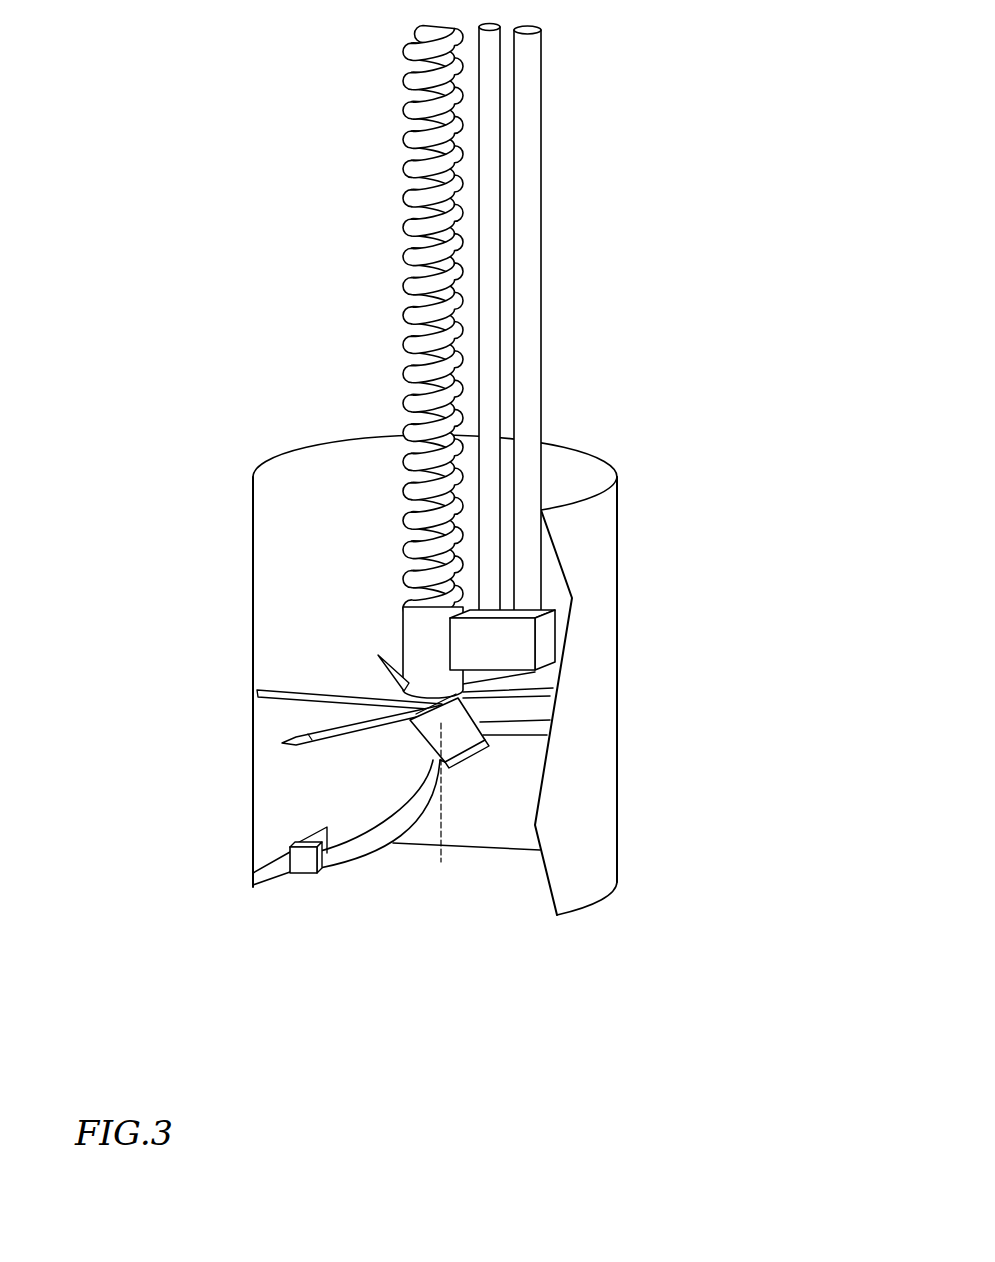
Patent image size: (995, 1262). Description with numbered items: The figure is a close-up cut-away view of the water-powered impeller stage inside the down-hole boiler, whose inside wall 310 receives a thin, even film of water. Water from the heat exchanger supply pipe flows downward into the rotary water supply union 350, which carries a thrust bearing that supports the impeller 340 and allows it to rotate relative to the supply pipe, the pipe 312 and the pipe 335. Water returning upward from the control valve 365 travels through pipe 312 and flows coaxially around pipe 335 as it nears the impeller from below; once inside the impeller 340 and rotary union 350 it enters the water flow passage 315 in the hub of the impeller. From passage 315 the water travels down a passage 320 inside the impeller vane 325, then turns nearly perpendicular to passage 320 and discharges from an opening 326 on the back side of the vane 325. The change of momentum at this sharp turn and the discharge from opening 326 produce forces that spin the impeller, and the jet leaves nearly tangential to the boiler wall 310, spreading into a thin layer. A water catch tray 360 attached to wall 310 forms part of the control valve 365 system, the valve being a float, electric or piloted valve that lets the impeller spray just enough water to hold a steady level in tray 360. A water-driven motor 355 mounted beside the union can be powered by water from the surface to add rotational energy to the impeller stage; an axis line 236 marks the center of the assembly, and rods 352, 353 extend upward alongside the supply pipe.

The boiler wall 310 is at (497, 817).
The impeller 340 is at (508, 710).
The pipe 335 is at (393, 852).
The lead rod 353 is at (494, 147).
The lead rod 352 is at (542, 278).
The rotary water supply union 350 is at (398, 632).
The water-driven motor 355 is at (524, 647).
The water flow passage 315 is at (410, 688).
The opening 326 is at (258, 696).
The impeller vane 325 is at (283, 742).
The passage 320 is at (487, 740).
The axis 236 is at (442, 862).
The pipe 312 is at (397, 820).
The water catch tray 360 is at (278, 871).
The control valve 365 is at (305, 863).